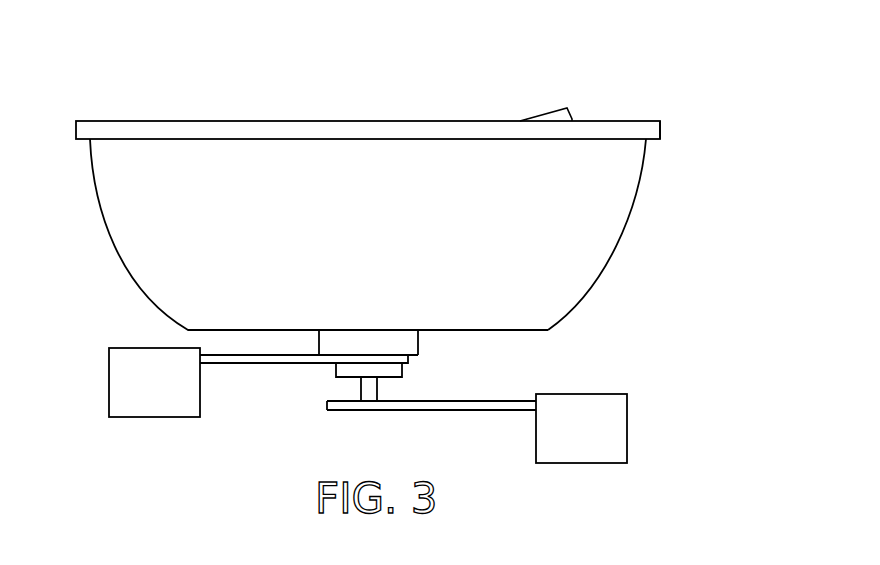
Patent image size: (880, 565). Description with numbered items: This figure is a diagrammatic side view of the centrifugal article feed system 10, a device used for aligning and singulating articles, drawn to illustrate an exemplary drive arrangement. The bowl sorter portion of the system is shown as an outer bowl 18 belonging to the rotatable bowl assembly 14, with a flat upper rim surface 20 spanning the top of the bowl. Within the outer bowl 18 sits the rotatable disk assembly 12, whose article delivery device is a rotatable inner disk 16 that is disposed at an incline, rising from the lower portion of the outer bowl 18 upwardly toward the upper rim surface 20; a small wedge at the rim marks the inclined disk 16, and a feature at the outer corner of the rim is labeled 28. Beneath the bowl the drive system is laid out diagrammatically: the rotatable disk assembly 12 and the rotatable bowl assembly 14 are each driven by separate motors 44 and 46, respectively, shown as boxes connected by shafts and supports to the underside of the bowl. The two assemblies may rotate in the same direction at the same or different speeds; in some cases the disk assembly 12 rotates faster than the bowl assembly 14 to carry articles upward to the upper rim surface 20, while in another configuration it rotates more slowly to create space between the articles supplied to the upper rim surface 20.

The centrifugal article feed system 10 is at (400, 233).
The rotatable disk assembly 12 is at (350, 166).
The rotatable bowl assembly 14 is at (106, 242).
The rotatable inner disk 16 is at (558, 106).
The outer bowl 18 is at (582, 259).
The upper rim surface 20 is at (155, 121).
The rim edge 28 is at (660, 121).
The motor 44 is at (109, 391).
The motor 46 is at (614, 431).